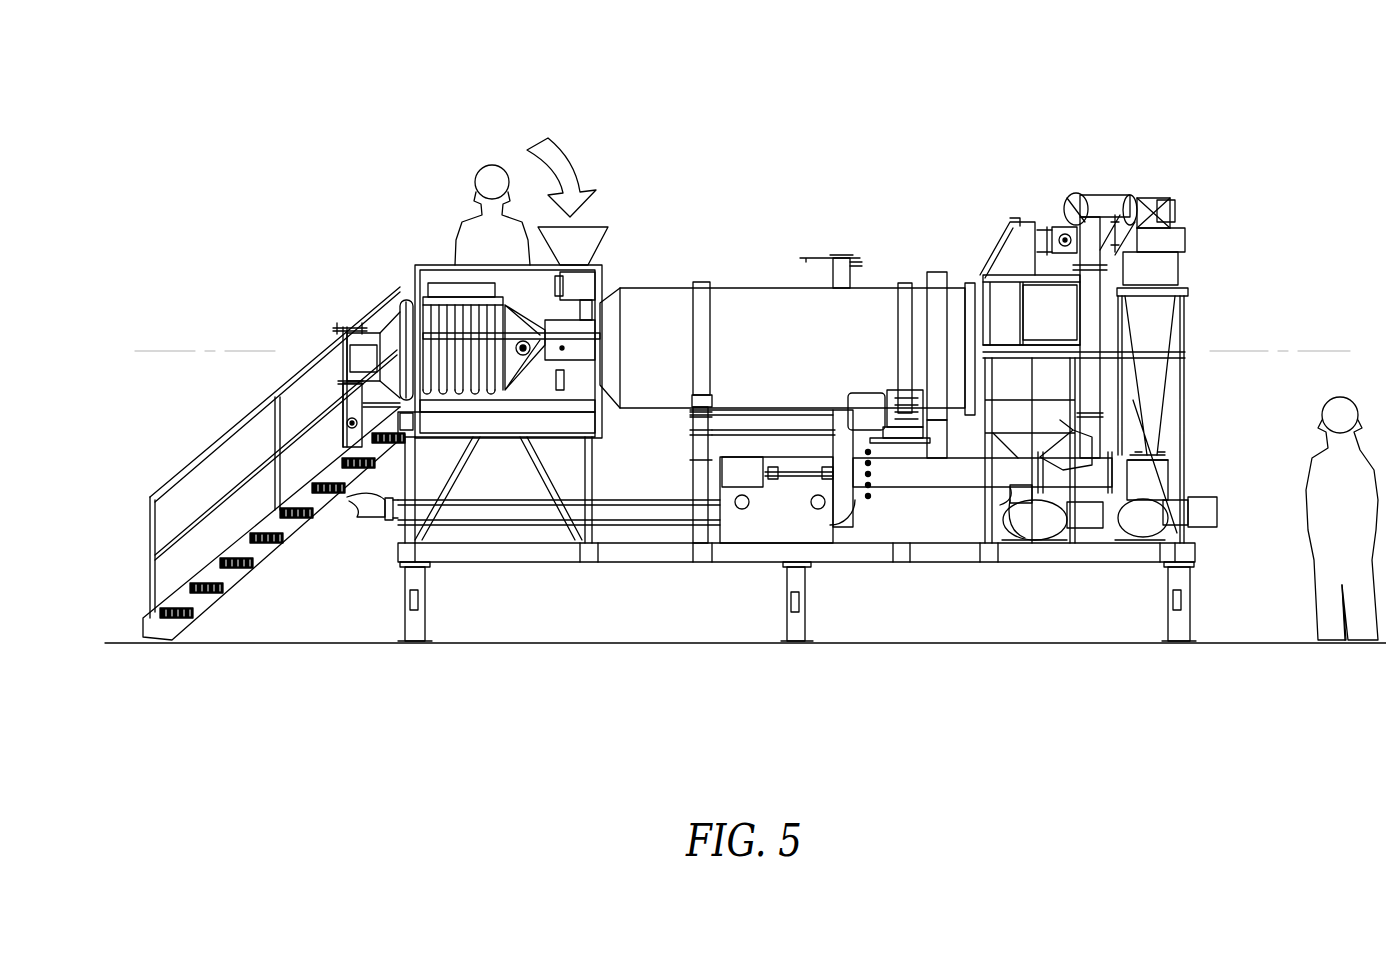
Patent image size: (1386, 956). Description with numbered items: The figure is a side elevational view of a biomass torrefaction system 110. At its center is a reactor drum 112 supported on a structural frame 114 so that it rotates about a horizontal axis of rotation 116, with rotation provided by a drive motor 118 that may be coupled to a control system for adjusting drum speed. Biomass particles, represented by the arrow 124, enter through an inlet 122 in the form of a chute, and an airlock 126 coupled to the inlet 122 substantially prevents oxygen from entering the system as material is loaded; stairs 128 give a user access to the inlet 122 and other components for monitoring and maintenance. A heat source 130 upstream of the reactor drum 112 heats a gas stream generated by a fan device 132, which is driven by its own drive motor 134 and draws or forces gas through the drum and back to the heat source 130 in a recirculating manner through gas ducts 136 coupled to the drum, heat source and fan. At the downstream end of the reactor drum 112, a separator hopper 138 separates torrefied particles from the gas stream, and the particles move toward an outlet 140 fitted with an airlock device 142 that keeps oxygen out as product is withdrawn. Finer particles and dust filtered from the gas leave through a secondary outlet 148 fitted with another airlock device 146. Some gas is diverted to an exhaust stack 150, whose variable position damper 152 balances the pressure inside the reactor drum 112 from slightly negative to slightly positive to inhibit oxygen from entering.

The biomass torrefaction system 110 is at (844, 96).
The reactor drum 112 is at (777, 307).
The structural frame 114 is at (548, 550).
The horizontal axis of rotation 116 is at (1245, 347).
The drive motor 118 is at (873, 410).
The inlet 122 is at (590, 240).
The arrow 124 is at (563, 162).
The airlock 126 is at (600, 283).
The stairs 128 is at (205, 450).
The heat source 130 is at (442, 300).
The fan device 132 is at (847, 500).
The drive motor 134 is at (745, 470).
The gas ducts 136 is at (365, 508).
The separator hopper 138 is at (1035, 232).
The outlet 140 is at (1010, 548).
The airlock device 142 is at (1050, 520).
The airlock device 146 is at (1158, 520).
The secondary outlet 148 is at (1125, 548).
The exhaust stack 150 is at (873, 272).
The variable position damper 152 is at (848, 262).